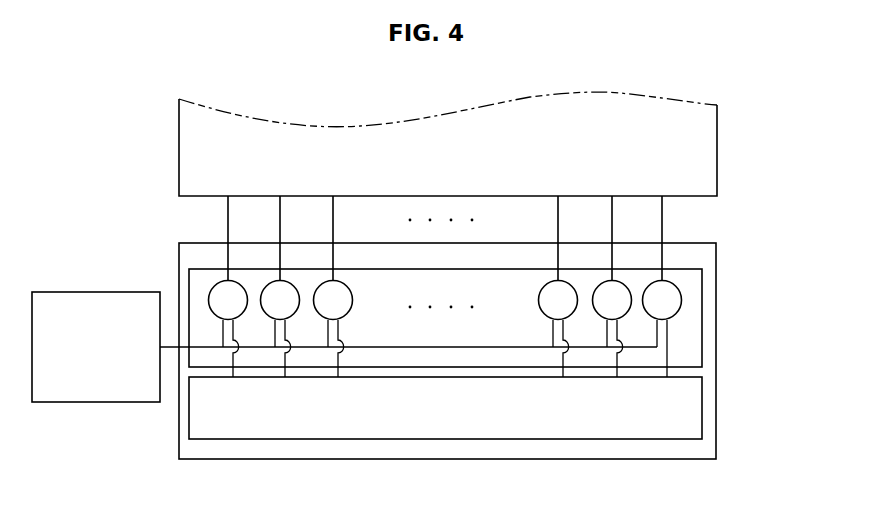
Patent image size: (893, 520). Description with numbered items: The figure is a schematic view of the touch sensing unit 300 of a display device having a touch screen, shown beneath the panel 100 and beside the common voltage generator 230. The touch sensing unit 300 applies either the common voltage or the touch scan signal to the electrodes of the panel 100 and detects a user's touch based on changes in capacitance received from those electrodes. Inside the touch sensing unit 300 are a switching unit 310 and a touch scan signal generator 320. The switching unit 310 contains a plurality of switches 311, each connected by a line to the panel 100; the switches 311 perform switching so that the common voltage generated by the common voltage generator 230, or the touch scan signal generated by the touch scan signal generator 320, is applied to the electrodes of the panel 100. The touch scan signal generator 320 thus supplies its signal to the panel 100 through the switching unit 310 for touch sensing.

The panel 100 is at (717, 150).
The common voltage generator 230 is at (96, 292).
The touch sensing unit 300 is at (716, 259).
The switching unit 310 is at (702, 334).
The switches 311 is at (682, 298).
The touch scan signal generator 320 is at (702, 407).